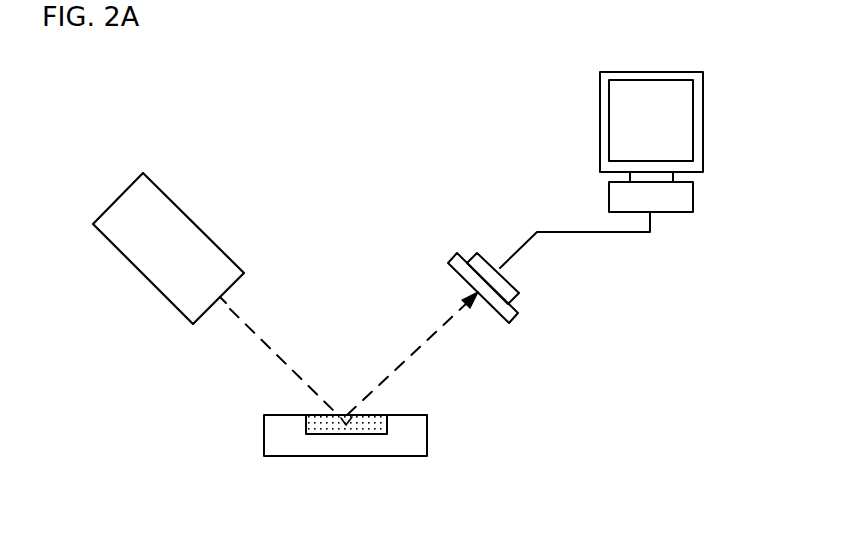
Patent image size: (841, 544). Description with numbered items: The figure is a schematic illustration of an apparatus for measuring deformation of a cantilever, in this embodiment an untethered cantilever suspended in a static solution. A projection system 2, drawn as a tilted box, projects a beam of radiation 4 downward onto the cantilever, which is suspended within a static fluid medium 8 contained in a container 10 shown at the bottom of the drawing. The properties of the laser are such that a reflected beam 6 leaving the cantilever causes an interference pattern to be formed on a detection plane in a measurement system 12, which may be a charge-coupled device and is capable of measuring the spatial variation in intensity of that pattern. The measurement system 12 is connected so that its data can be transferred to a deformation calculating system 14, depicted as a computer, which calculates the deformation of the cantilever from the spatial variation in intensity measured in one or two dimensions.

The projection system 2 is at (174, 263).
The beam of radiation 4 is at (270, 349).
The reflected beam 6 is at (415, 350).
The static fluid medium 8 is at (363, 418).
The container 10 is at (418, 440).
The measurement system 12 is at (463, 277).
The deformation calculating system 14 is at (603, 79).